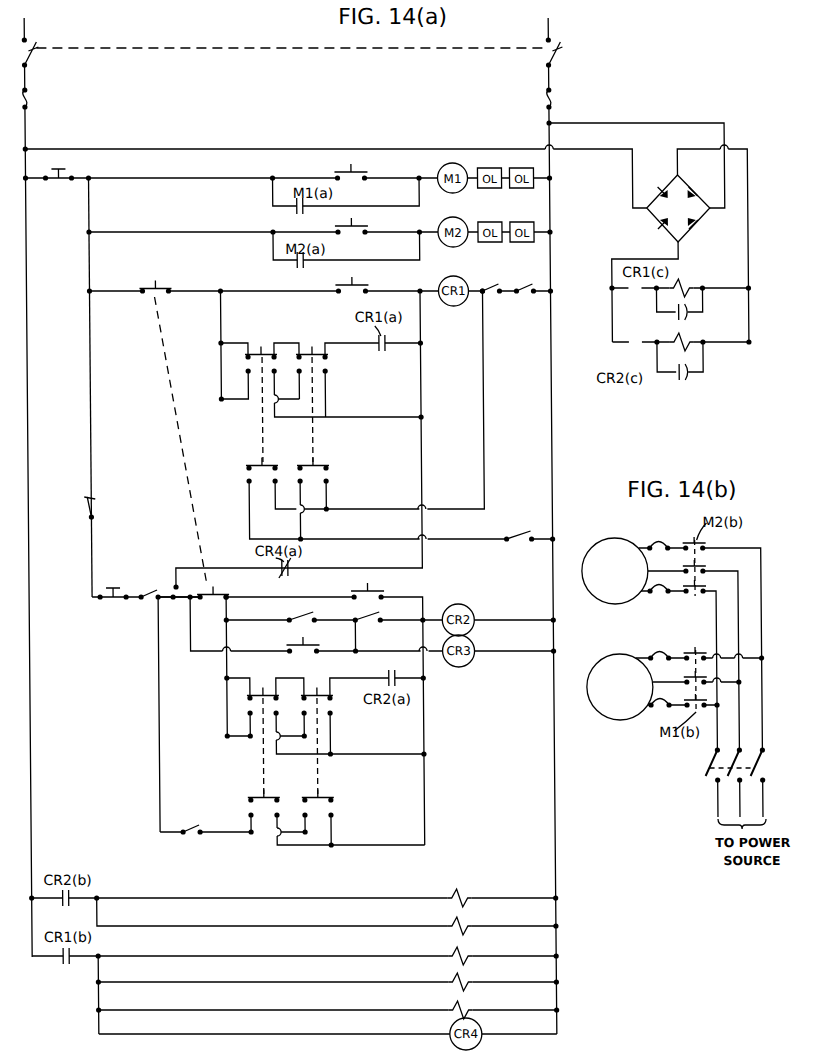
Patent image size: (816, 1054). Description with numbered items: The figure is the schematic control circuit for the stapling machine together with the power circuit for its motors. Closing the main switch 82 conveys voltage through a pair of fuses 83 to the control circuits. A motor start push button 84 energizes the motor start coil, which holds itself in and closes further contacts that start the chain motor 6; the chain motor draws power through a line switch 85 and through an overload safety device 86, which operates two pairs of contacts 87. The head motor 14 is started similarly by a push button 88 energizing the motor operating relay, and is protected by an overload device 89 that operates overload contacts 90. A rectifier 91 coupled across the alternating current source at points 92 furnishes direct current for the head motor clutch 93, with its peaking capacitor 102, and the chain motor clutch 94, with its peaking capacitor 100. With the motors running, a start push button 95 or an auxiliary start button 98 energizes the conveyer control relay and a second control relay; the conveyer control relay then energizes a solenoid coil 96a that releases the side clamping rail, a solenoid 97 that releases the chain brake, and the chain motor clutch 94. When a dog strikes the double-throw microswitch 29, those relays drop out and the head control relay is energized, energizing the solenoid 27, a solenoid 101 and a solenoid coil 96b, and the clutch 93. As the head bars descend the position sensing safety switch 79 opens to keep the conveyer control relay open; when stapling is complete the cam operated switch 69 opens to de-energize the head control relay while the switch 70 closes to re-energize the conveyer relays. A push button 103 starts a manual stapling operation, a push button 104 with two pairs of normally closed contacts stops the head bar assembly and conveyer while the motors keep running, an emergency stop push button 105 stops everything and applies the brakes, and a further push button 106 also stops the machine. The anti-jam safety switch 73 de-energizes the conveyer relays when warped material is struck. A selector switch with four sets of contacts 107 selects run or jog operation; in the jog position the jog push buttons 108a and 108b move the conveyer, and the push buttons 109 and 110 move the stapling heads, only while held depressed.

In FIG. 14A, the main switch 82 is at (34, 57).
In FIG. 14A, the fuses 83 is at (30, 99).
In FIG. 14A, the points 92 is at (26, 148).
In FIG. 14A, the motor start push button 84 is at (346, 172).
In FIG. 14A, the contacts 87 is at (516, 167).
In FIG. 14A, the push button 88 is at (366, 226).
In FIG. 14A, the overload contacts 90 is at (516, 221).
In FIG. 14A, the rectifier 91 is at (636, 309).
In FIG. 14A, the head motor clutch 93 is at (681, 287).
In FIG. 14A, the peaking capacitor 102 is at (688, 310).
In FIG. 14A, the chain motor clutch 94 is at (687, 340).
In FIG. 14A, the peaking capacitor 100 is at (690, 373).
In FIG. 14A, the emergency stop push button 105 is at (59, 184).
In FIG. 14A, the push button 104 is at (150, 297).
In FIG. 14A, the push button 103 is at (335, 294).
In FIG. 14A, the switch 69 is at (523, 288).
In FIG. 14A, the selector switch contacts 107 is at (486, 296).
In FIG. 14A, the push button 109 is at (245, 479).
In FIG. 14A, the remote push button 110 is at (328, 479).
In FIG. 14A, the anti-jam safety switch 73 is at (82, 505).
In FIG. 14A, the position sensing safety switch 79 is at (147, 594).
In FIG. 14A, the push button 106 is at (108, 603).
In FIG. 14A, the microswitch 29 is at (166, 603).
In FIG. 14A, the start push button 95 is at (386, 588).
In FIG. 14A, the cam operated switch 70 is at (299, 615).
In FIG. 14A, the start button 98 is at (311, 645).
In FIG. 14A, the jog control push button 108a is at (244, 806).
In FIG. 14A, the remote jog push button 108b is at (326, 810).
In FIG. 14A, the solenoid coil 96a is at (452, 897).
In FIG. 14A, the solenoid 97 is at (452, 924).
In FIG. 14A, the solenoid 27 is at (455, 952).
In FIG. 14A, the solenoid 101 is at (455, 978).
In FIG. 14A, the solenoid coil 96b is at (455, 1006).
In FIG. 14B, the head motor 14 is at (598, 542).
In FIG. 14B, the overload device 89 is at (655, 589).
In FIG. 14B, the overload safety device 86 is at (658, 704).
In FIG. 14B, the chain motor 6 is at (607, 717).
In FIG. 14B, the line switch 85 is at (702, 762).